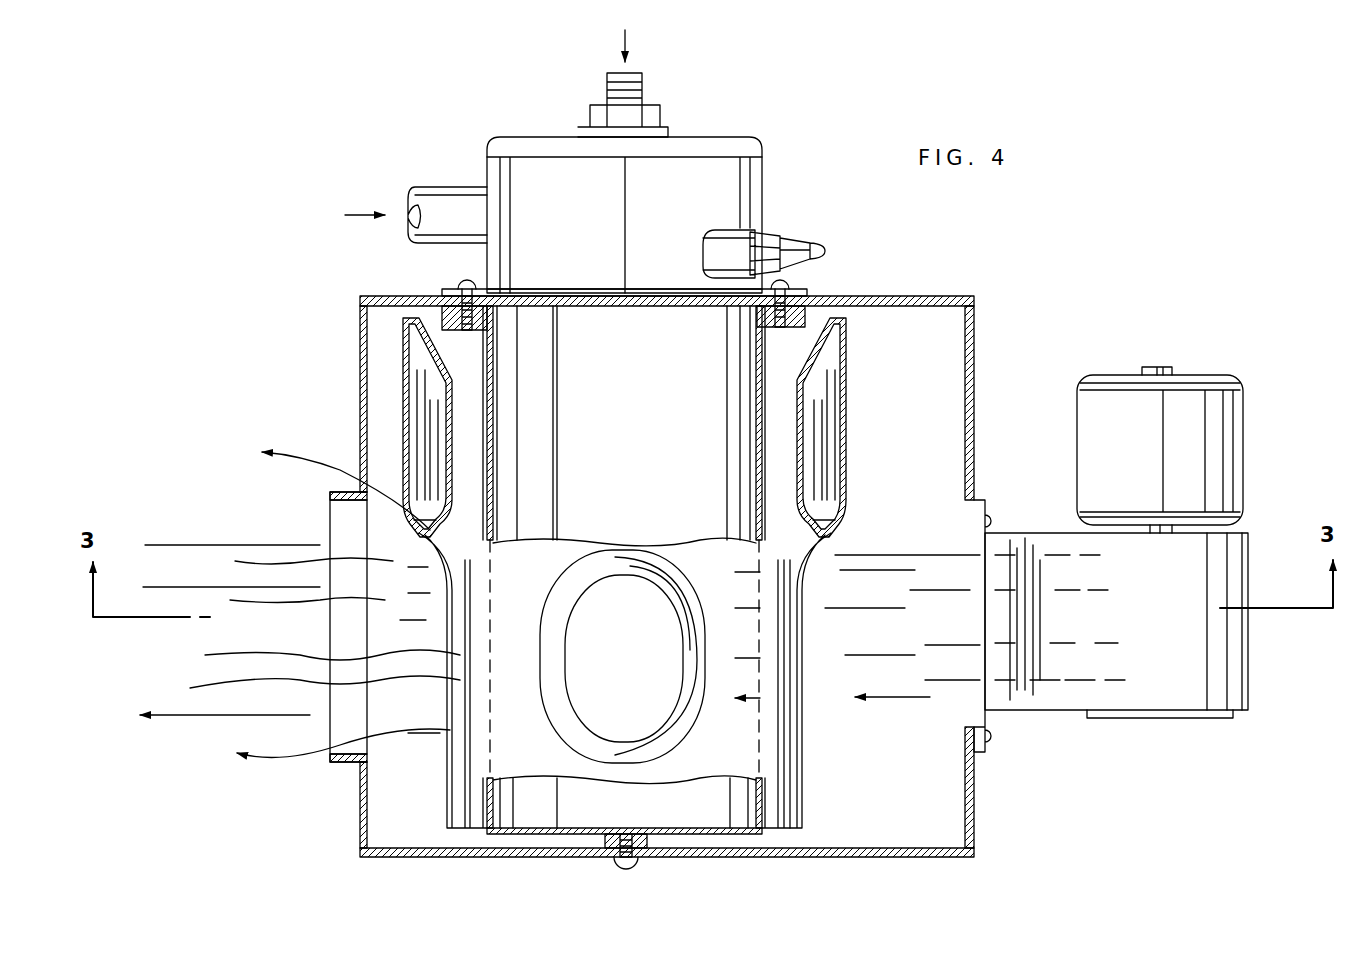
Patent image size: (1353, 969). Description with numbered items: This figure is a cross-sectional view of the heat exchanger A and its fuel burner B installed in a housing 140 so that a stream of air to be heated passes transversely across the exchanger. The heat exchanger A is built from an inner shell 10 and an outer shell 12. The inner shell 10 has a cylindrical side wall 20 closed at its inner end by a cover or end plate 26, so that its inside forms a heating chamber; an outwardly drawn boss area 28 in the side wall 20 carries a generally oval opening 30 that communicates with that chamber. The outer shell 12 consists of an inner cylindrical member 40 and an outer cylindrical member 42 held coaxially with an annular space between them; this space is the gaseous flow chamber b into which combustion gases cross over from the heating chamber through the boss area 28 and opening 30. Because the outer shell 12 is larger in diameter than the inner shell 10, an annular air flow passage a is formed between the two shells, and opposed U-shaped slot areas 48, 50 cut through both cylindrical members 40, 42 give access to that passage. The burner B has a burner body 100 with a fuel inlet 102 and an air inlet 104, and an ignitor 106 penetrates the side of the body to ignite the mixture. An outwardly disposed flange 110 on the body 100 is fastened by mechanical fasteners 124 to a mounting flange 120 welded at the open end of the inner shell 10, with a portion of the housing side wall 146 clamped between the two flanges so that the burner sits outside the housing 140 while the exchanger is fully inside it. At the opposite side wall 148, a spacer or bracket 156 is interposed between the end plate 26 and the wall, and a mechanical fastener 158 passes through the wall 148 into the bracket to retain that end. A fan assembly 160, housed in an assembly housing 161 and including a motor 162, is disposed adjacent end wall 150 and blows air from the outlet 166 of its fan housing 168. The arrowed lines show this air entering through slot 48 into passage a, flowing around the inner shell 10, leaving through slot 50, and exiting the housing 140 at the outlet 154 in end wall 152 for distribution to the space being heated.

The inner shell 10 is at (753, 478).
The outer shell 12 is at (825, 545).
The side wall 20 is at (493, 382).
The end plate 26 is at (640, 830).
The boss area 28 is at (682, 575).
The oval opening 30 is at (567, 630).
The inner cylindrical member 40 is at (800, 433).
The outer cylindrical member 42 is at (843, 470).
The U-shaped slot area 48 is at (798, 632).
The U-shaped slot area 50 is at (455, 632).
The burner body 100 is at (762, 170).
The fuel inlet 102 is at (642, 85).
The air inlet 104 is at (450, 195).
The ignitor 106 is at (790, 230).
The flange 110 is at (520, 290).
The mounting flange 120 is at (800, 318).
The mechanical fasteners 124 is at (792, 312).
The housing 140 is at (940, 248).
The side wall 146 is at (935, 296).
The side wall 148 is at (838, 857).
The end wall 150 is at (974, 350).
The end wall 152 is at (360, 340).
The outlet 154 is at (345, 498).
The spacer or bracket 156 is at (636, 852).
The mechanical fastener 158 is at (620, 865).
The fan assembly 160 is at (1068, 525).
The assembly housing 161 is at (1185, 365).
The motor 162 is at (1160, 450).
The outlet 166 is at (962, 608).
The fan housing 168 is at (1116, 625).
The air flow passage a is at (440, 598).
The gaseous flow chamber b is at (428, 398).
The heat exchanger A is at (850, 435).
The fuel burner B is at (775, 133).